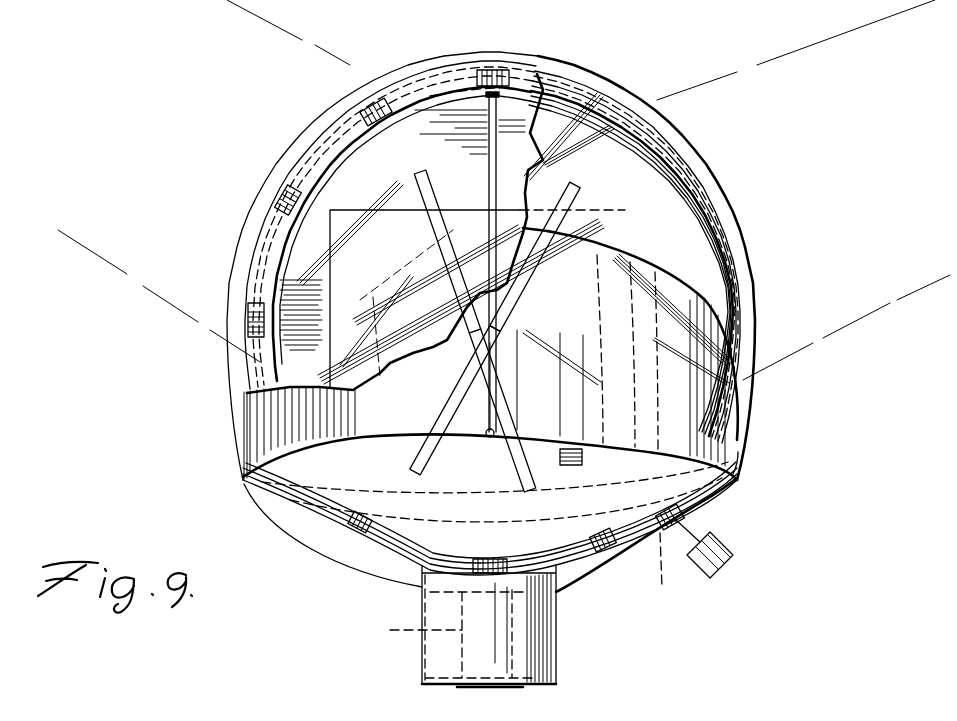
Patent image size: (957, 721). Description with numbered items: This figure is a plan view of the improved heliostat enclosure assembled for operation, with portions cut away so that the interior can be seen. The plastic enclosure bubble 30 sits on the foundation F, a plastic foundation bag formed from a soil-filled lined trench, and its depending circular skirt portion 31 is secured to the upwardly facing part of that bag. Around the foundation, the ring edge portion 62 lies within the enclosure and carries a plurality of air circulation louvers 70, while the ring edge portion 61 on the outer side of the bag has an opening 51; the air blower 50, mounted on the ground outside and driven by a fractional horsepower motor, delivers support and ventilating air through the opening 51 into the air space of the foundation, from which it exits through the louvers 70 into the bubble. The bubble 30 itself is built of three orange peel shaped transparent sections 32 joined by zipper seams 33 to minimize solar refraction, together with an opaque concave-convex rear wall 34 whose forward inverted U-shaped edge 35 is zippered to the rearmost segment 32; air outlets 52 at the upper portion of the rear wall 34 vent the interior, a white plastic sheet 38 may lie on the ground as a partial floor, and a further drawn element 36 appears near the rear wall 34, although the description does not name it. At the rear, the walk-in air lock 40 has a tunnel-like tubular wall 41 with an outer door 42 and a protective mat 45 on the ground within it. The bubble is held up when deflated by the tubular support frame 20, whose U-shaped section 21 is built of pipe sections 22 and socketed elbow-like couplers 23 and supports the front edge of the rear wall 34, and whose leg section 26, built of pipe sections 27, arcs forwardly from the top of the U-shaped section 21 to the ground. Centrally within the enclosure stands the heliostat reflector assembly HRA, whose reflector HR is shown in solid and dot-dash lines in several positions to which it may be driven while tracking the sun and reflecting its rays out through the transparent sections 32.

The support frame 20 is at (488, 190).
The U-shaped section 21 is at (410, 475).
The pipe sections 22 is at (553, 494).
The socketed elbow-like couplers 23 is at (572, 426).
The leg section 26 is at (470, 130).
The pipe sections 27 is at (500, 173).
The plastic enclosure bubble 30 is at (240, 483).
The depending circular skirt portion 31 is at (297, 170).
The transparent sections 32 is at (663, 150).
The zipper seams 33 is at (595, 236).
The rear wall 34 is at (330, 510).
The inverted U-shaped edge 35 is at (740, 462).
The inner dome 36 is at (603, 443).
The white plastic sheet 38 is at (438, 98).
The walk-in air lock 40 is at (565, 660).
The tunnel-like tubular wall 41 is at (437, 648).
The outer door 42 is at (468, 688).
The protective mat 45 is at (411, 633).
The air blower 50 is at (733, 537).
The opening 51 is at (674, 570).
The air outlets 52 is at (560, 458).
The ring edge portion 61 is at (605, 86).
The ring edge portion 62 is at (528, 82).
The air circulation louvers 70 is at (485, 70).
The foundation F is at (756, 287).
The reflector HR is at (345, 302).
The heliostat reflector assembly HRA is at (382, 210).